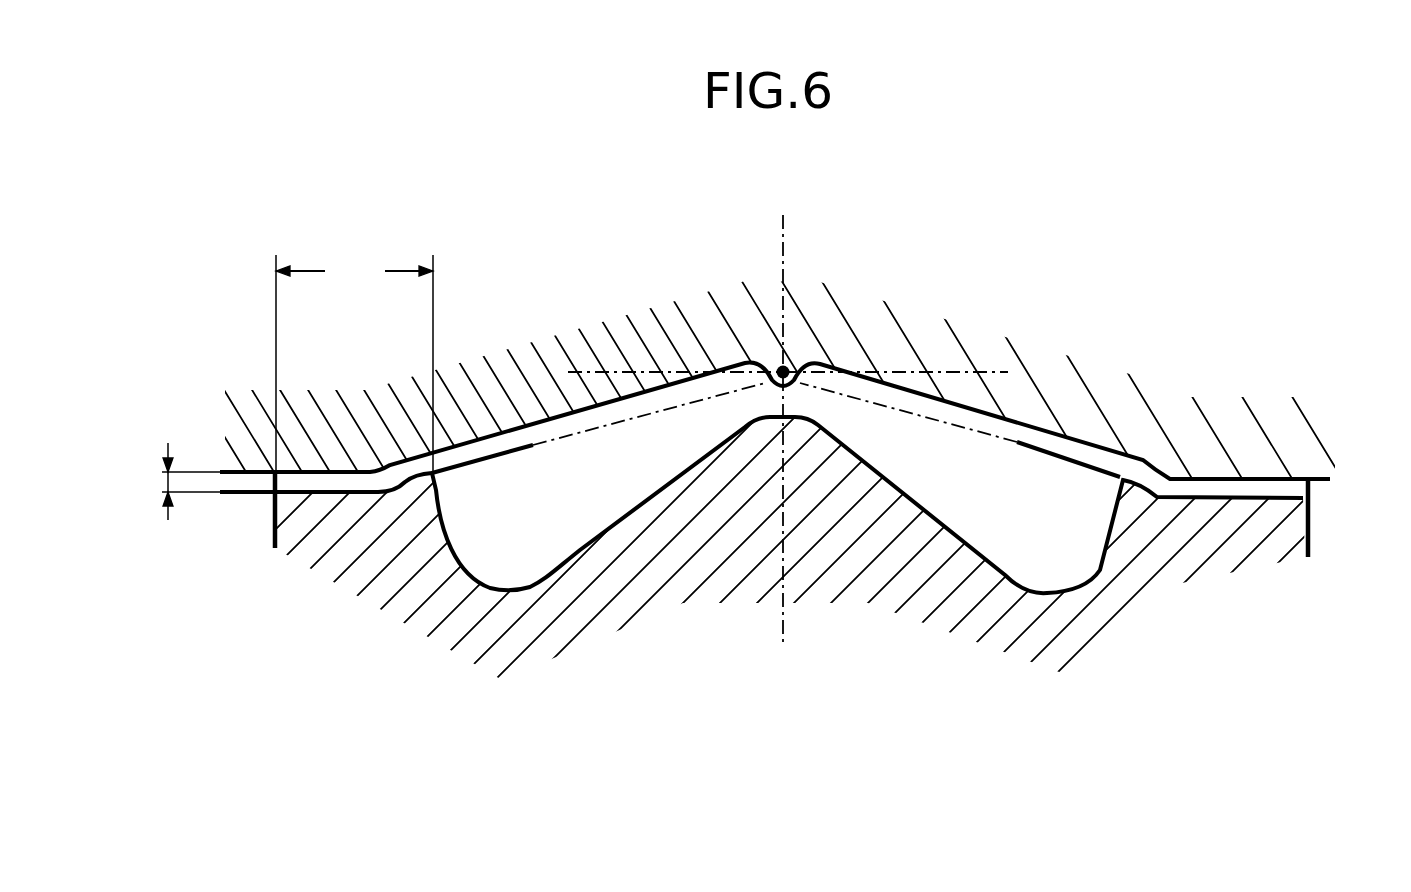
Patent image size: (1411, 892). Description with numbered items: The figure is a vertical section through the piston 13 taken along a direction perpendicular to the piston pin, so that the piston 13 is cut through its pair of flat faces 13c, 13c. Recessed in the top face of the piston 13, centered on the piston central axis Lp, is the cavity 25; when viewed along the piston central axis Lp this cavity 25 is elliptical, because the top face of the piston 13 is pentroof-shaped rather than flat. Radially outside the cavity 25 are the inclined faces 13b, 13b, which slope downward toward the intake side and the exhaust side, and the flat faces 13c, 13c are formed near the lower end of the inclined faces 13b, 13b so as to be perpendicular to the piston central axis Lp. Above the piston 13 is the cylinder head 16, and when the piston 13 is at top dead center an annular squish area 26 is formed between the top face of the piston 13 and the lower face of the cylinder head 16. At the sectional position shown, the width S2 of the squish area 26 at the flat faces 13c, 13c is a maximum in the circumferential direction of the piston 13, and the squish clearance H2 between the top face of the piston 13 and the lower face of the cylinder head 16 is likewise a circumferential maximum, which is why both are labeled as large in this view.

The piston 13 is at (811, 532).
The inclined faces 13b is at (435, 472).
The flat faces 13c is at (300, 482).
The cylinder head 16 is at (857, 350).
The cavity 25 is at (575, 492).
The squish area 26 is at (338, 487).
The piston central axis Lp is at (783, 230).
The width of the squish area S2 is at (354, 359).
The squish clearance H2 is at (162, 481).